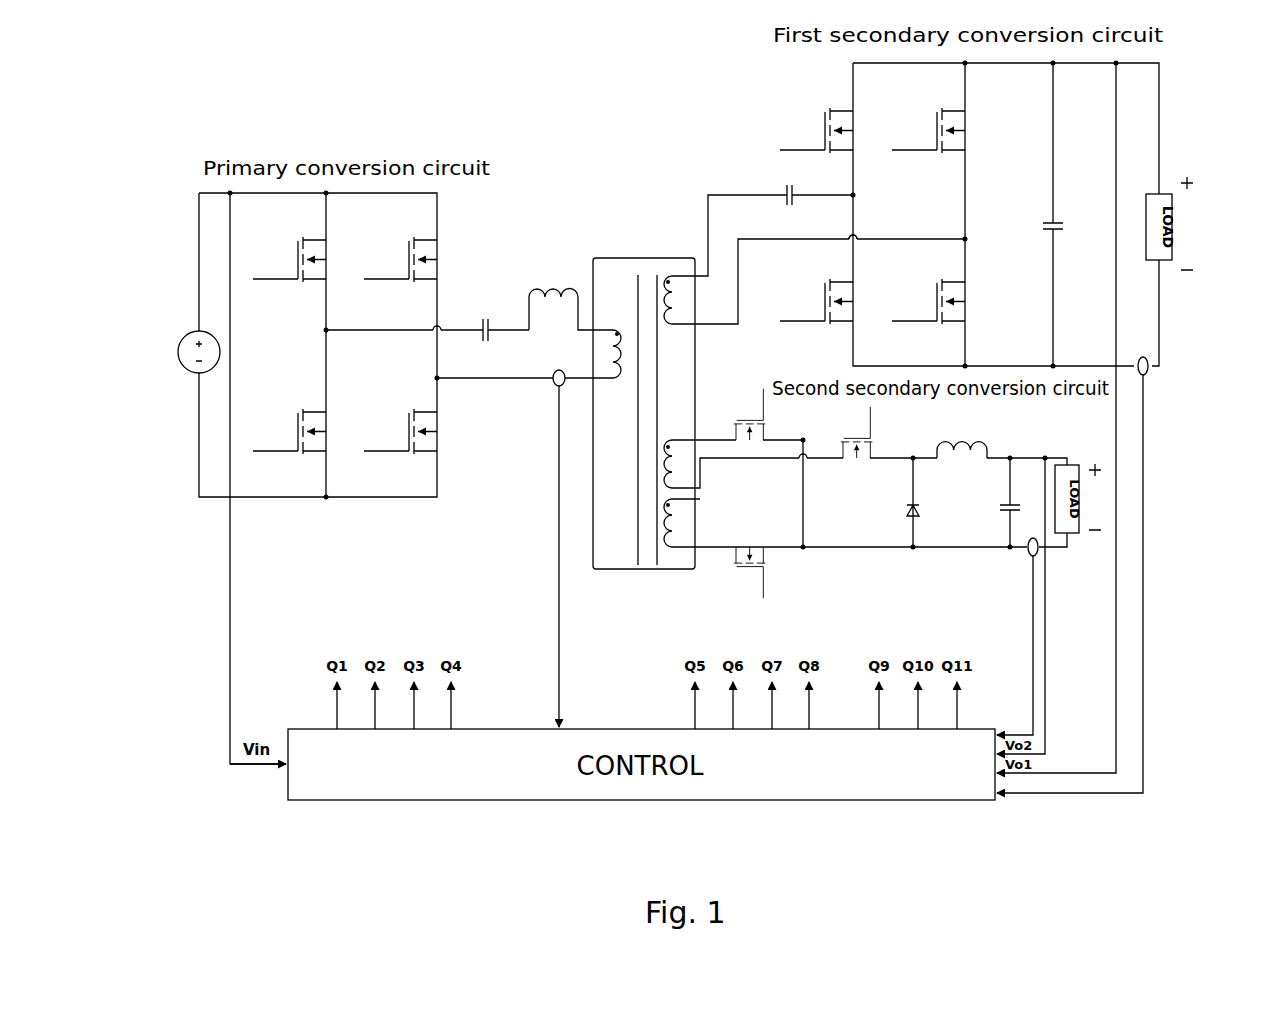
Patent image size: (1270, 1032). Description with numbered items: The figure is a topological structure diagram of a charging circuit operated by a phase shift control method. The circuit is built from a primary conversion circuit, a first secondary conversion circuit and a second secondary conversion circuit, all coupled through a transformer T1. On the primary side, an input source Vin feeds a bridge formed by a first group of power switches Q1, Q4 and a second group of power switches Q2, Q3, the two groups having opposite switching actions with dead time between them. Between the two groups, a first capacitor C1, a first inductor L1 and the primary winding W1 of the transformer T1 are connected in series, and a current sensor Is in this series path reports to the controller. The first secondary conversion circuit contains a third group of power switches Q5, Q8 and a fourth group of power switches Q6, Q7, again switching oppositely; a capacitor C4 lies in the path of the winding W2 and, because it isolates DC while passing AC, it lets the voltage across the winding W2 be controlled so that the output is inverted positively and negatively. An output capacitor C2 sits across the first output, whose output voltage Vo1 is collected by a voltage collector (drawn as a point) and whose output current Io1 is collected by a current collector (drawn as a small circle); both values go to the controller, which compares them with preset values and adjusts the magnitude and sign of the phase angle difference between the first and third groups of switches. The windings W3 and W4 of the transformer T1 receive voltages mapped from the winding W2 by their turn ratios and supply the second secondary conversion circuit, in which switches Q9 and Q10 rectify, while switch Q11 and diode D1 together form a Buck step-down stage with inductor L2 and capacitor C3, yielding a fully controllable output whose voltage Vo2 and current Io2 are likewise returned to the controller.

The input voltage source Vin is at (175, 352).
The power switch Q1 is at (289, 238).
The power switch Q2 is at (400, 238).
The power switch Q3 is at (289, 409).
The power switch Q4 is at (400, 409).
The first capacitor C1 is at (484, 321).
The first inductor L1 is at (571, 302).
The primary current sensor Is is at (547, 548).
The transformer T1 is at (644, 413).
The primary winding W1 is at (608, 354).
The winding W2 is at (679, 300).
The winding W3 is at (679, 464).
The winding W4 is at (679, 523).
The power switch Q5 is at (816, 118).
The power switch Q6 is at (928, 118).
The power switch Q7 is at (816, 288).
The power switch Q8 is at (928, 288).
The capacitor C4 is at (787, 187).
The first output capacitor C2 is at (1064, 214).
The output voltage Vo1 is at (1102, 418).
The output current Io1 is at (1072, 575).
The second secondary rectifier transistor Q9 is at (762, 414).
The second secondary rectifier transistor Q10 is at (768, 572).
The power switch Q11 is at (853, 432).
The second output inductor L2 is at (962, 441).
The diode D1 is at (924, 502).
The second output capacitor C3 is at (1021, 502).
The second output voltage Vo2 is at (1054, 606).
The second output current sensor Io2 is at (1017, 636).